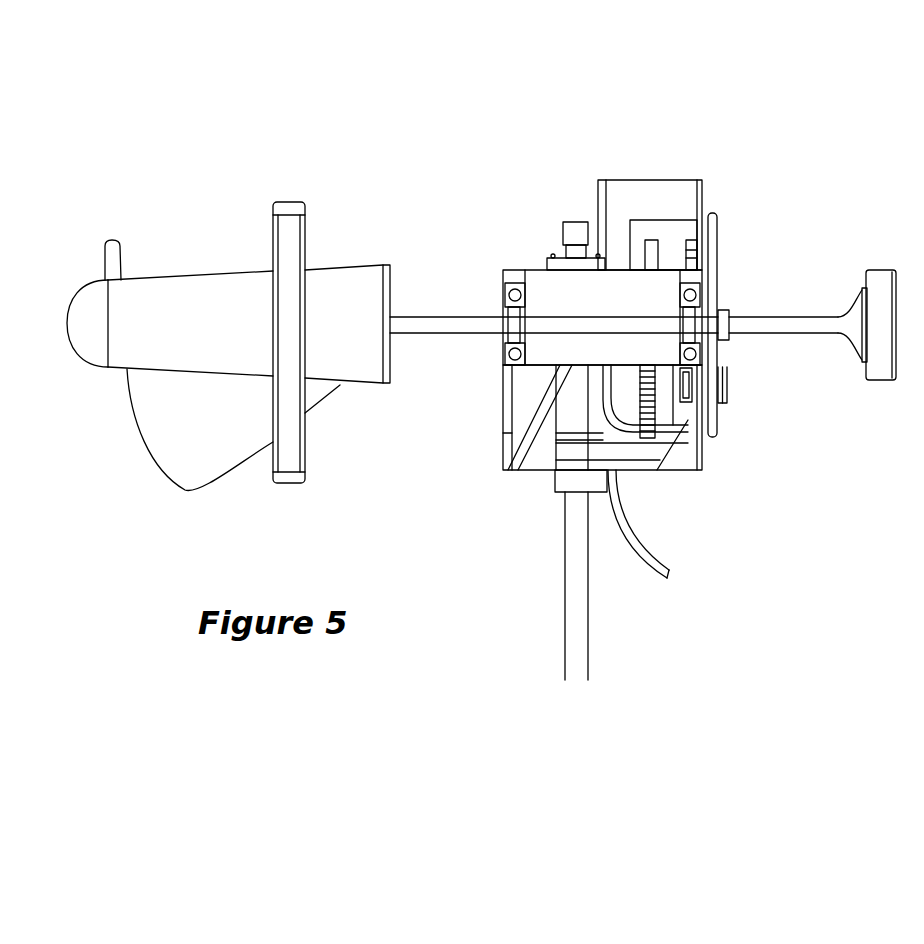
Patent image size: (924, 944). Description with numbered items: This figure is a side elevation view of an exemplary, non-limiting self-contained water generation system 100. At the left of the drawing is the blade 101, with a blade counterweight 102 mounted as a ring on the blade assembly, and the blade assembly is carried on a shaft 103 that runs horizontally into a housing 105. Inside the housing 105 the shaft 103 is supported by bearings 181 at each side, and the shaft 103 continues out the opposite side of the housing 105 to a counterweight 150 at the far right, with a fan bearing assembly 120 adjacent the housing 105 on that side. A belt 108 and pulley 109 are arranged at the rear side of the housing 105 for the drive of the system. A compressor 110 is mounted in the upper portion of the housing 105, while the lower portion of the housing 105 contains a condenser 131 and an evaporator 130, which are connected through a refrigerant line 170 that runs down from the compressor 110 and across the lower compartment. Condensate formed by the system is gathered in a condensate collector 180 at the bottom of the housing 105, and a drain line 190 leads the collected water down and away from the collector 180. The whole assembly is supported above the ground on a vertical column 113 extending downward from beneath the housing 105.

The system 100 is at (68, 88).
The blade 101 is at (165, 278).
The blade counterweight 102 is at (290, 200).
The shaft 103 is at (418, 317).
The housing 105 is at (613, 180).
The compressor 110 is at (645, 222).
The belt 108 is at (713, 215).
The fan bearing assembly 120 is at (727, 388).
The counterweight 150 is at (876, 382).
The pulley 109 is at (707, 437).
The condenser 131 is at (503, 435).
The evaporator 130 is at (677, 407).
The condensate collector 180 is at (555, 473).
The refrigerant line 170 is at (630, 430).
The drain line 190 is at (643, 567).
The column 113 is at (563, 638).
The bearings 181 is at (675, 290).